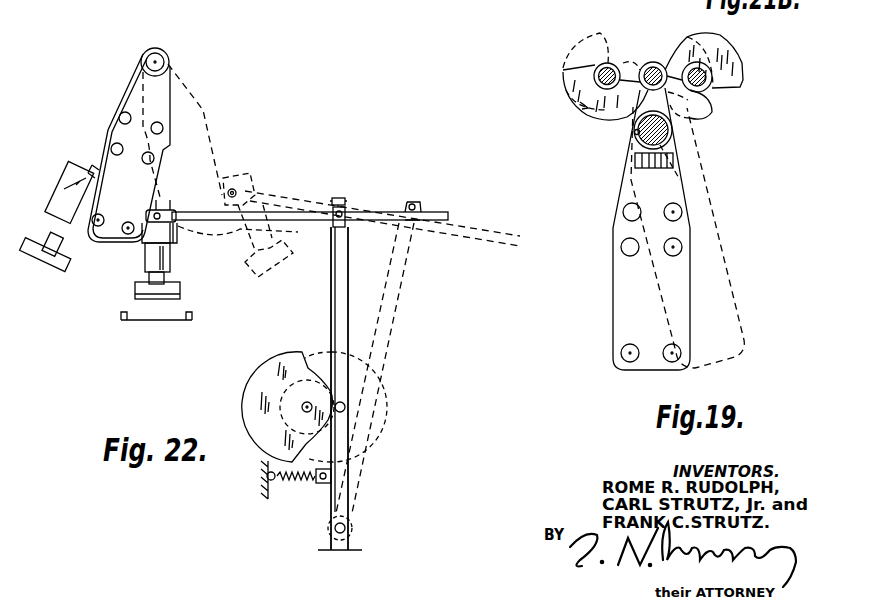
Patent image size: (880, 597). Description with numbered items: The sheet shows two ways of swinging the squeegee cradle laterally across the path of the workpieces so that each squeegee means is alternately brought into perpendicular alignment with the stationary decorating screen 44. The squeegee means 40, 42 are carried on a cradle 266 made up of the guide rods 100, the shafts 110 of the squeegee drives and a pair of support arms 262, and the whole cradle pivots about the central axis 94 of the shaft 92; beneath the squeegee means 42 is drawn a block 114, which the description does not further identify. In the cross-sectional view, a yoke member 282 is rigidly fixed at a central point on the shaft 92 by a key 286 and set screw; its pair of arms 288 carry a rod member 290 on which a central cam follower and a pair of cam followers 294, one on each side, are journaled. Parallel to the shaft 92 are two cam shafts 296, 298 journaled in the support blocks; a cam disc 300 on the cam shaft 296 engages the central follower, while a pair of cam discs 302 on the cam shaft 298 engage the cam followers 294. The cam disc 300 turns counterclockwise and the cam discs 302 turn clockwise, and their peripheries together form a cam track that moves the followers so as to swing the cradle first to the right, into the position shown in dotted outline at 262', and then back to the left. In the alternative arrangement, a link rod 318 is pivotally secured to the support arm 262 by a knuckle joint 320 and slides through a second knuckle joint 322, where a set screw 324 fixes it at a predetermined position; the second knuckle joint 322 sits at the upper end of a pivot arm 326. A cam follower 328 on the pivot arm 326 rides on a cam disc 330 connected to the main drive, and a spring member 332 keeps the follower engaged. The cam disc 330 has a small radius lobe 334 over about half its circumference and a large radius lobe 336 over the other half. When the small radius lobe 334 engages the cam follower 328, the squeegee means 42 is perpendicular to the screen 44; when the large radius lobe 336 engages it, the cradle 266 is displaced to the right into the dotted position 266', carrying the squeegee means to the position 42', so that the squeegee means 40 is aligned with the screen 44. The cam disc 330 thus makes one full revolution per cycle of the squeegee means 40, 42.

In FIG. 22, the squeegee means 40 is at (54, 223).
In FIG. 22, the squeegee means 42 is at (180, 263).
In FIG. 22, the squeegee means in displaced position 42' is at (349, 225).
In FIG. 22, the stationary decorating screen 44 is at (168, 322).
In FIG. 22, the shaft 92 is at (168, 60).
In FIG. 22, the central axis 94 is at (161, 53).
In FIG. 19, the guide rods 100 is at (673, 203).
In FIG. 19, the shafts 110 is at (668, 252).
In FIG. 22, the block 114 is at (181, 288).
In FIG. 22, the support arm 262 is at (99, 173).
In FIG. 19, the support arm 262 is at (628, 229).
In FIG. 19, the support arm in displaced position 262' is at (716, 237).
In FIG. 22, the cradle 266 is at (105, 148).
In FIG. 22, the cradle in displaced position 266' is at (211, 130).
In FIG. 19, the yoke member 282 is at (637, 142).
In FIG. 19, the key 286 is at (634, 132).
In FIG. 19, the arms 288 is at (700, 117).
In FIG. 19, the rod member 290 is at (656, 64).
In FIG. 19, the cam followers 294 is at (651, 62).
In FIG. 19, the cam shaft 296 is at (710, 88).
In FIG. 19, the cam shaft 298 is at (605, 62).
In FIG. 19, the cam disc 300 is at (710, 43).
In FIG. 19, the cam discs 302 is at (564, 98).
In FIG. 22, the link rod 318 is at (388, 212).
In FIG. 22, the knuckle joint 320 is at (166, 207).
In FIG. 22, the second knuckle joint 322 is at (345, 212).
In FIG. 22, the set screw 324 is at (338, 197).
In FIG. 22, the pivot arm 326 is at (331, 293).
In FIG. 22, the cam follower 328 is at (346, 405).
In FIG. 22, the cam disc 330 is at (250, 402).
In FIG. 22, the spring member 332 is at (300, 480).
In FIG. 22, the small radius lobe 334 is at (330, 422).
In FIG. 22, the large radius lobe 336 is at (268, 368).